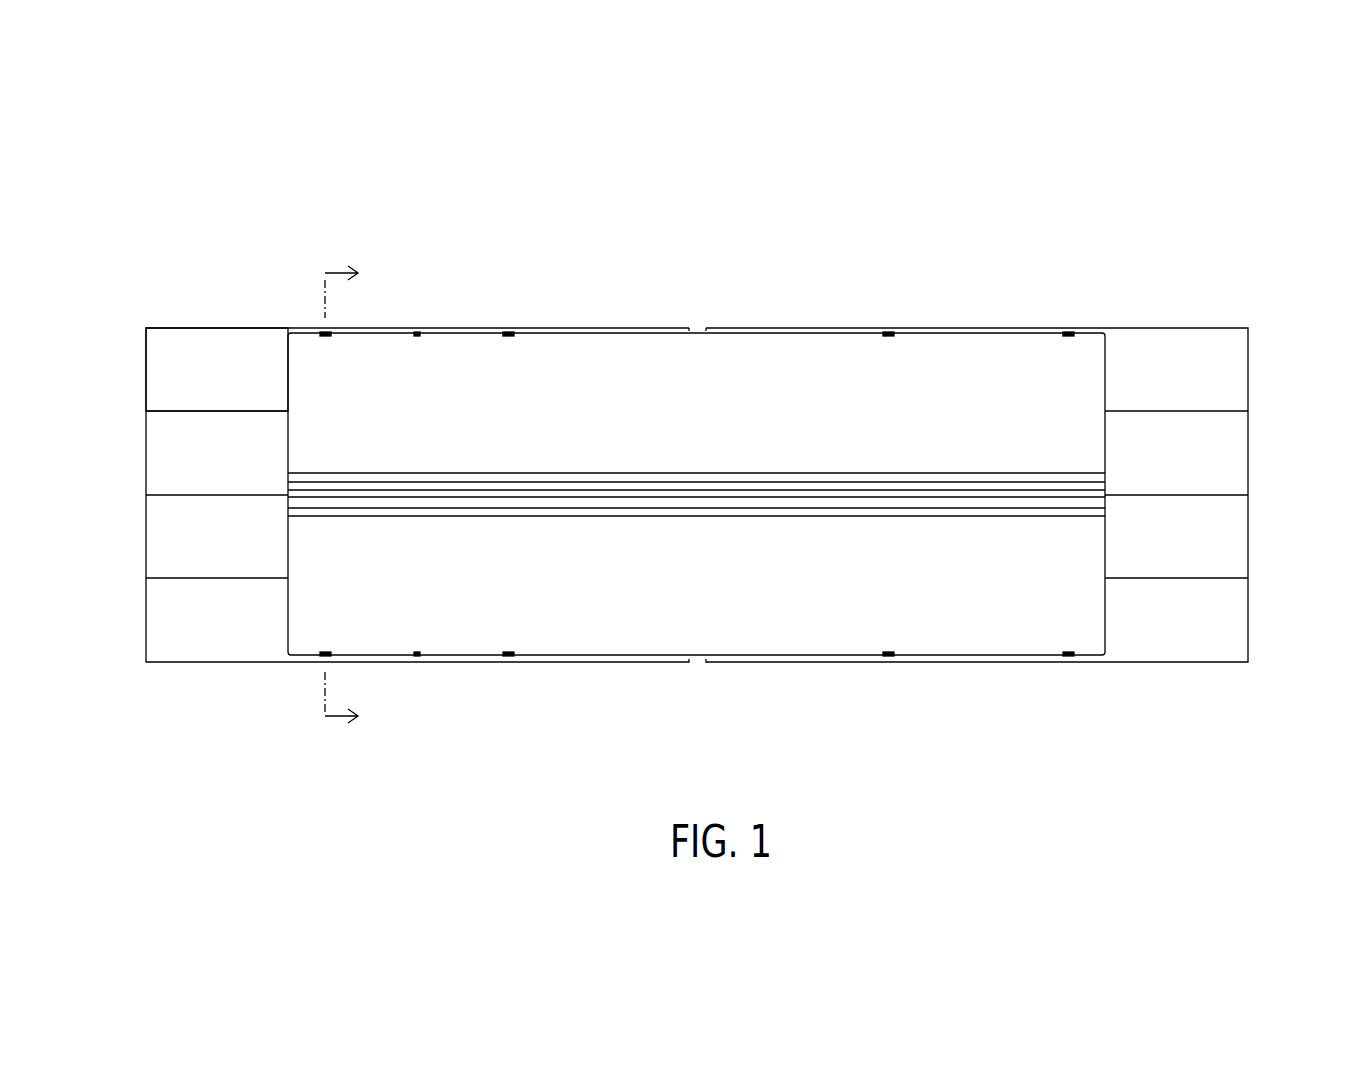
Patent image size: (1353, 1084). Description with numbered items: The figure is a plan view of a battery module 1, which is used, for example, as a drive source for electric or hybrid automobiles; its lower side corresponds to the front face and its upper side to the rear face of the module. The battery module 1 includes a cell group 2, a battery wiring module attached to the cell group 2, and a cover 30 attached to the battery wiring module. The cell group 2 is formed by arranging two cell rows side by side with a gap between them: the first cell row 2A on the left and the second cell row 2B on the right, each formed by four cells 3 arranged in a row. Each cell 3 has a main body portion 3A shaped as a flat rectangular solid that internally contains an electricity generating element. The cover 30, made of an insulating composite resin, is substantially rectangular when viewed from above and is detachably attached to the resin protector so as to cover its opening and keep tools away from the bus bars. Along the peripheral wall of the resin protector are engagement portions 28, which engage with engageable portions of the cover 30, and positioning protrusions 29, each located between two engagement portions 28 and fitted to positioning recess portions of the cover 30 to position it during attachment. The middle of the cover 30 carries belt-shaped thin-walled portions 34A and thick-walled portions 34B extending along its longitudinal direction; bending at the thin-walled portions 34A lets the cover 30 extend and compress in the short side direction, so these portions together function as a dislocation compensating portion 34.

The battery module 1 is at (696, 250).
The cell group 2 is at (112, 357).
The first cell row 2A is at (214, 666).
The second cell row 2B is at (1097, 666).
The cell 3 is at (158, 362).
The main body portion 3A is at (204, 344).
The engagement portion 28 is at (322, 332).
The positioning protrusion 29 is at (418, 332).
The cover 30 is at (465, 333).
The dislocation compensating portion 34 is at (744, 370).
The thin-walled portion 34A is at (1105, 509).
The thick-walled portion 34B is at (762, 507).